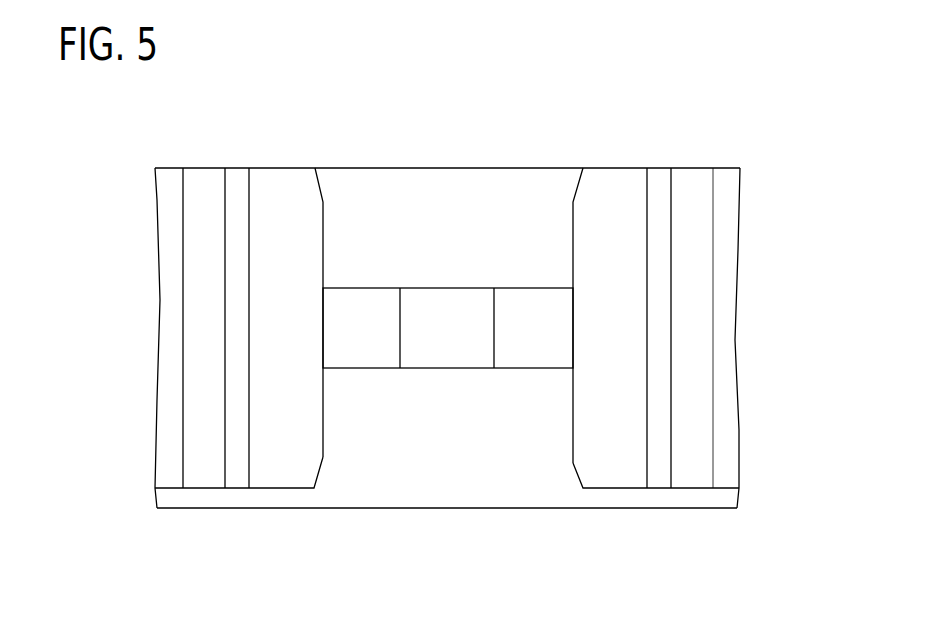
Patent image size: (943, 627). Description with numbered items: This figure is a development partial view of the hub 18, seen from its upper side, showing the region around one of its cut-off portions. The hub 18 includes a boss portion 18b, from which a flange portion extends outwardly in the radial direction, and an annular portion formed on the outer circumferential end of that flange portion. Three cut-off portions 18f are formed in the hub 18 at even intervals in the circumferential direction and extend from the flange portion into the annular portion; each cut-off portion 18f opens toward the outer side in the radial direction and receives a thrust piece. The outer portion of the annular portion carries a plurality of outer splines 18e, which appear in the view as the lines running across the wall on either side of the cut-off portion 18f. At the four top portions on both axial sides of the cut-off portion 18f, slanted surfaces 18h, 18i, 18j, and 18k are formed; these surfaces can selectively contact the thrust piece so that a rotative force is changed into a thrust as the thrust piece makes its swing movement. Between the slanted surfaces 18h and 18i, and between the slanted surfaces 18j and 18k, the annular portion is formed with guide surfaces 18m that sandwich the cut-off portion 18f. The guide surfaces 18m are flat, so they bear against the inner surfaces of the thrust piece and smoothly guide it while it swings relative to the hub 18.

The hub 18 is at (344, 93).
The boss portion 18b is at (432, 508).
The outer splines 18e is at (207, 233).
The cut-off portions 18f is at (447, 398).
The slanted surface 18h is at (317, 472).
The slanted surface 18i is at (577, 468).
The slanted surface 18j is at (316, 185).
The slanted surface 18k is at (575, 183).
The guide surfaces 18m is at (362, 330).